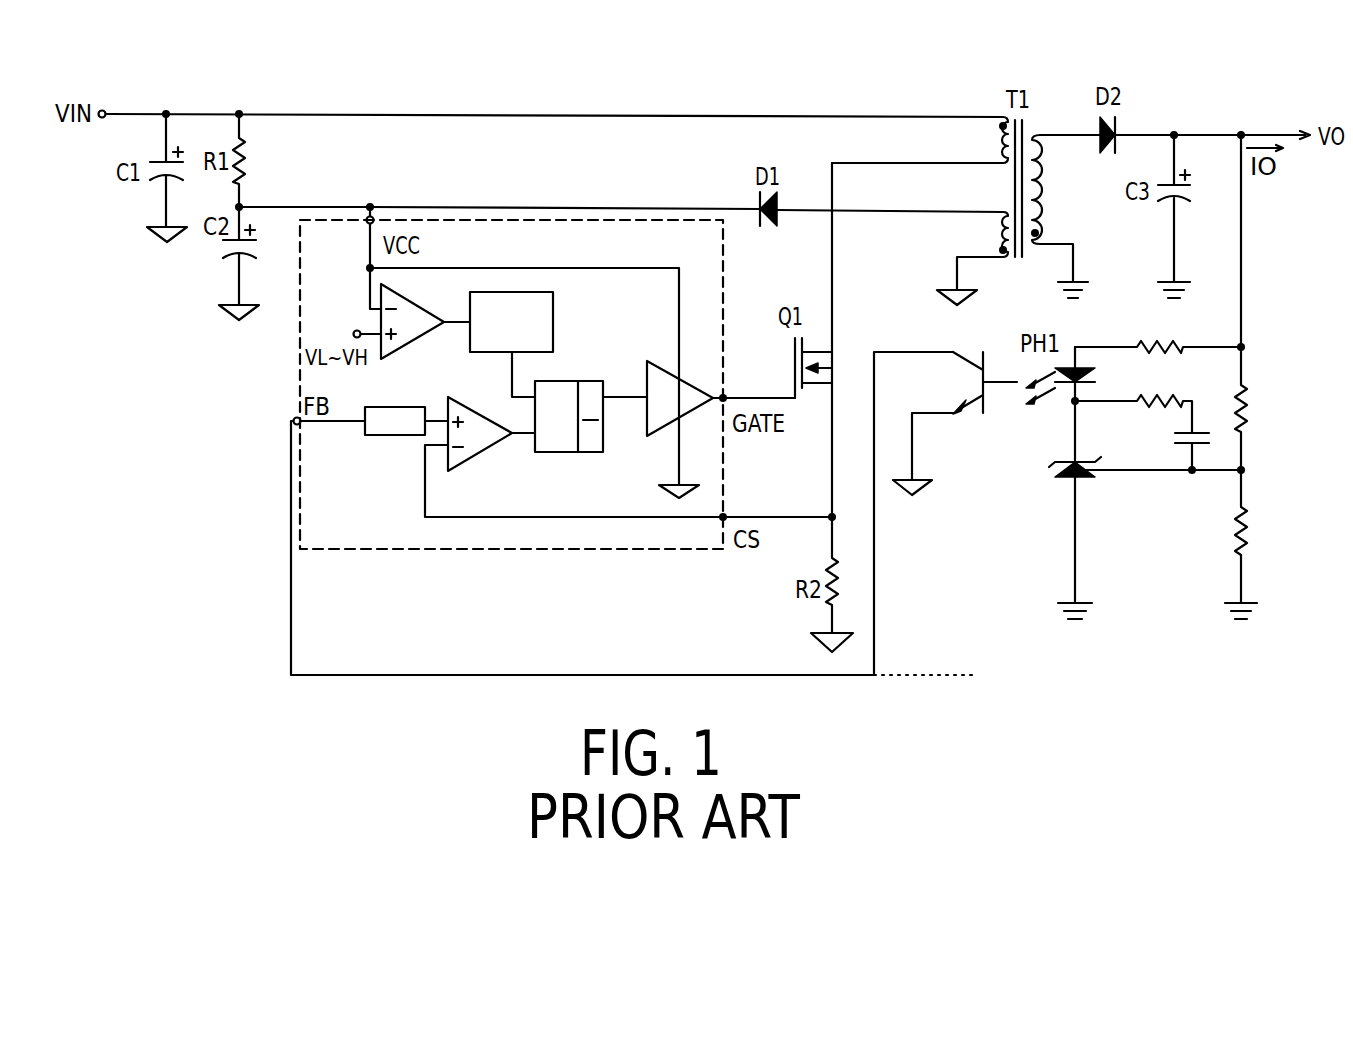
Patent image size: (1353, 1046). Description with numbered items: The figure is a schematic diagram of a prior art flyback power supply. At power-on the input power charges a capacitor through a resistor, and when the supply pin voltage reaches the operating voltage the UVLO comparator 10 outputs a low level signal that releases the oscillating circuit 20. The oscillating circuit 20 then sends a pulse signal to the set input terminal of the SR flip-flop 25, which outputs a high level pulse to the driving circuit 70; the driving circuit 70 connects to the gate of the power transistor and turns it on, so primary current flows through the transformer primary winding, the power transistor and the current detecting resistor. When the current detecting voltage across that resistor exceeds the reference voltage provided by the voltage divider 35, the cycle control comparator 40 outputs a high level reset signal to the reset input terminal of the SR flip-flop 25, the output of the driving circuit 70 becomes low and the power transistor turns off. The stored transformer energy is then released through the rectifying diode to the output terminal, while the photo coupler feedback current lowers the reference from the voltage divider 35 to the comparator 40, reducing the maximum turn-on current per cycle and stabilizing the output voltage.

The UVLO comparator 10 is at (418, 340).
The oscillating circuit 20 is at (553, 308).
The SR flip-flop 25 is at (647, 372).
The voltage divider 35 is at (371, 432).
The cycle control comparator 40 is at (485, 450).
The driving circuit 70 is at (652, 433).